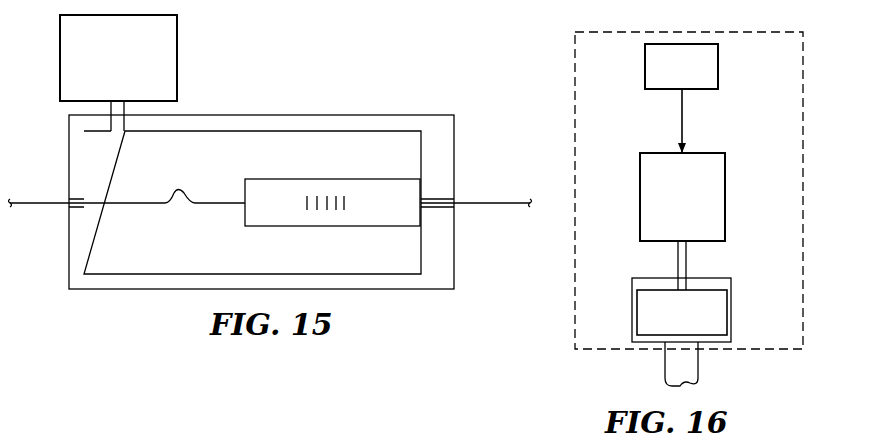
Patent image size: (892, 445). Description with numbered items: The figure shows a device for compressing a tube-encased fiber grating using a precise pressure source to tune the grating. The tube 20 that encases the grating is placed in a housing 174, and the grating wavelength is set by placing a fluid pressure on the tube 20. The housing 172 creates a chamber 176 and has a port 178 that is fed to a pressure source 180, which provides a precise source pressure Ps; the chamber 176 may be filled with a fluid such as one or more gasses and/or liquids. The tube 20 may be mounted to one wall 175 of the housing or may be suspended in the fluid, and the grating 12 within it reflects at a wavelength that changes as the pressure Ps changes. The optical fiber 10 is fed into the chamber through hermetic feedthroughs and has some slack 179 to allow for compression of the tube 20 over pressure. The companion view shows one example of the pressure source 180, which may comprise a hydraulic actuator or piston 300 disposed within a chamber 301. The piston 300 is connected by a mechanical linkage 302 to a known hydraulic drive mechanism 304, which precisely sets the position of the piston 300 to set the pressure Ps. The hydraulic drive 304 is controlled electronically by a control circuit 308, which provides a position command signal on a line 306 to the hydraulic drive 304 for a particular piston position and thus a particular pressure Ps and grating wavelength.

In FIG. 15, the optical fiber 10 is at (38, 201).
In FIG. 15, the sensor assembly 12 is at (327, 195).
In FIG. 15, the tube 20 is at (280, 178).
In FIG. 15, the housing 172 is at (70, 205).
In FIG. 15, the housing 174 is at (167, 292).
In FIG. 15, the wall 175 is at (445, 130).
In FIG. 15, the chamber 176 is at (143, 259).
In FIG. 15, the port 178 is at (117, 124).
In FIG. 16, the port 178 is at (697, 372).
In FIG. 15, the slack 179 is at (180, 197).
In FIG. 15, the pressure source 180 is at (175, 61).
In FIG. 16, the pressure source 180 is at (572, 75).
In FIG. 16, the piston 300 is at (718, 312).
In FIG. 16, the chamber 301 is at (642, 283).
In FIG. 16, the mechanical linkage 302 is at (688, 252).
In FIG. 16, the hydraulic drive mechanism 304 is at (718, 203).
In FIG. 16, the line 306 is at (683, 112).
In FIG. 16, the control circuit 308 is at (718, 83).